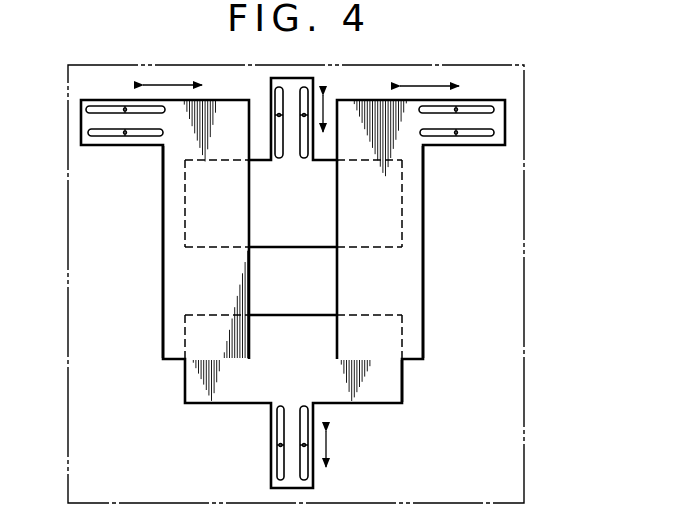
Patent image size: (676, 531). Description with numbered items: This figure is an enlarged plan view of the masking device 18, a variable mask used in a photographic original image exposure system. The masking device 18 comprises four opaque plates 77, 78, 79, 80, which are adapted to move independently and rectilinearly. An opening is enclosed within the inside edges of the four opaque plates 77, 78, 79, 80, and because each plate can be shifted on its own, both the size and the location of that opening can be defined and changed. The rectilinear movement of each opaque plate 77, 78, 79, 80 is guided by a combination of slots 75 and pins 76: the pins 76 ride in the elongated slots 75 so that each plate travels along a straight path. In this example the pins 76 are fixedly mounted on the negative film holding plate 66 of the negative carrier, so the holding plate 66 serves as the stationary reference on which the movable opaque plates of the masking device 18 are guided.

The masking device 18 is at (166, 365).
The negative film holding plate 66 is at (510, 397).
The slots 75 is at (102, 136).
The pins 76 is at (126, 136).
The opaque plate 77 is at (277, 214).
The opaque plate 78 is at (381, 392).
The opaque plate 79 is at (170, 274).
The opaque plate 80 is at (405, 284).